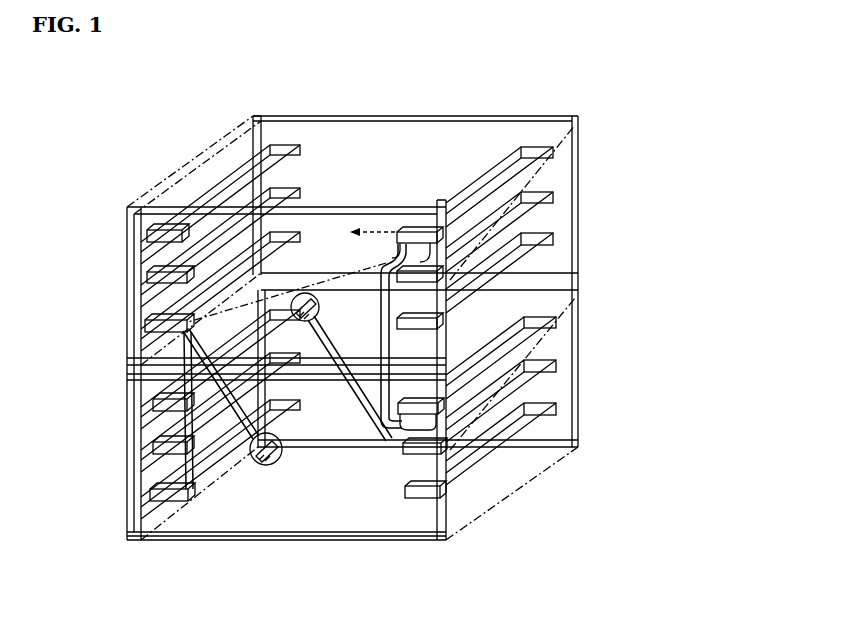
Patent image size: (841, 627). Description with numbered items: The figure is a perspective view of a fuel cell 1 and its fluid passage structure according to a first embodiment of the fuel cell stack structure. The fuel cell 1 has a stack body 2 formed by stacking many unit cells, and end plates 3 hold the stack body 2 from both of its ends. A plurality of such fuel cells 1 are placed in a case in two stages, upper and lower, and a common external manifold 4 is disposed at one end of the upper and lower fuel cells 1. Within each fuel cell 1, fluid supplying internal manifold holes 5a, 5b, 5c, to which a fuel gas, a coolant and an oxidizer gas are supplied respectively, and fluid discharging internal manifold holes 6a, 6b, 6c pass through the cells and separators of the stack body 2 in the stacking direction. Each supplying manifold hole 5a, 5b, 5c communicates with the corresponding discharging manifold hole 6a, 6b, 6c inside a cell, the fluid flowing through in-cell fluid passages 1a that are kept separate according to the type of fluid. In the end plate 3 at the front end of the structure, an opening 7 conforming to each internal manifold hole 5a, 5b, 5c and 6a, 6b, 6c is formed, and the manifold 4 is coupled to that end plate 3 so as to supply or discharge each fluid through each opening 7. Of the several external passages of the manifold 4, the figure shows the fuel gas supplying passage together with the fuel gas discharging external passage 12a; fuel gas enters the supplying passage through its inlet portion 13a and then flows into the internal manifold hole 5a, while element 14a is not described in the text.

The fuel cell 1 is at (250, 110).
The in-cell fluid passage 1a is at (387, 228).
The stack body 2 is at (430, 140).
The end plate 3 is at (133, 207).
The common manifold 4 is at (247, 540).
The fluid supplying internal manifold hole 5a is at (550, 155).
The fluid supplying internal manifold hole 5b is at (543, 202).
The fluid supplying internal manifold hole 5c is at (543, 247).
The fluid discharging internal manifold hole 6a is at (185, 320).
The fluid discharging internal manifold hole 6b is at (181, 254).
The fluid discharging internal manifold hole 6c is at (181, 219).
The opening 7 is at (410, 230).
The fuel gas discharging external passage 12a is at (250, 462).
The inlet portion 13a is at (315, 309).
The cable clamp 14a is at (259, 448).